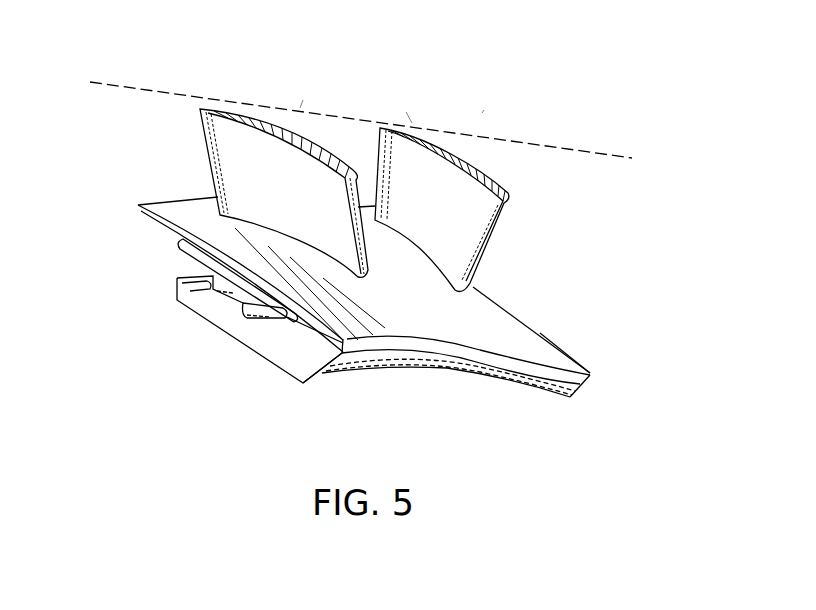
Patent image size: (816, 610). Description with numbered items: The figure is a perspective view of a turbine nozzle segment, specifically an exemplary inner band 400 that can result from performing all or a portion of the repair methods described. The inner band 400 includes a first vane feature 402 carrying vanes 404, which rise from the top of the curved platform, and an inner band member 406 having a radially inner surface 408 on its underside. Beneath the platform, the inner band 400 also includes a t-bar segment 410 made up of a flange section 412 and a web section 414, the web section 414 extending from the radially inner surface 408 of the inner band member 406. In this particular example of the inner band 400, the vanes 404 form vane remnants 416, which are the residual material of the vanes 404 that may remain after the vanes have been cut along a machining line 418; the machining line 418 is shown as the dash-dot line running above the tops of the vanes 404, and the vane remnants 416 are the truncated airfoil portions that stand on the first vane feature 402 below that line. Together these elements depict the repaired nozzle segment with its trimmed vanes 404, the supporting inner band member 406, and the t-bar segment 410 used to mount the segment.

The inner band 400 is at (482, 113).
The first vane feature 402 is at (350, 277).
The vanes 404 is at (297, 177).
The inner band member 406 is at (540, 333).
The radially inner surface 408 is at (314, 340).
The t-bar segment 410 is at (165, 308).
The flange section 412 is at (175, 288).
The web section 414 is at (197, 277).
The vane remnants 416 is at (412, 123).
The machining line 418 is at (127, 82).